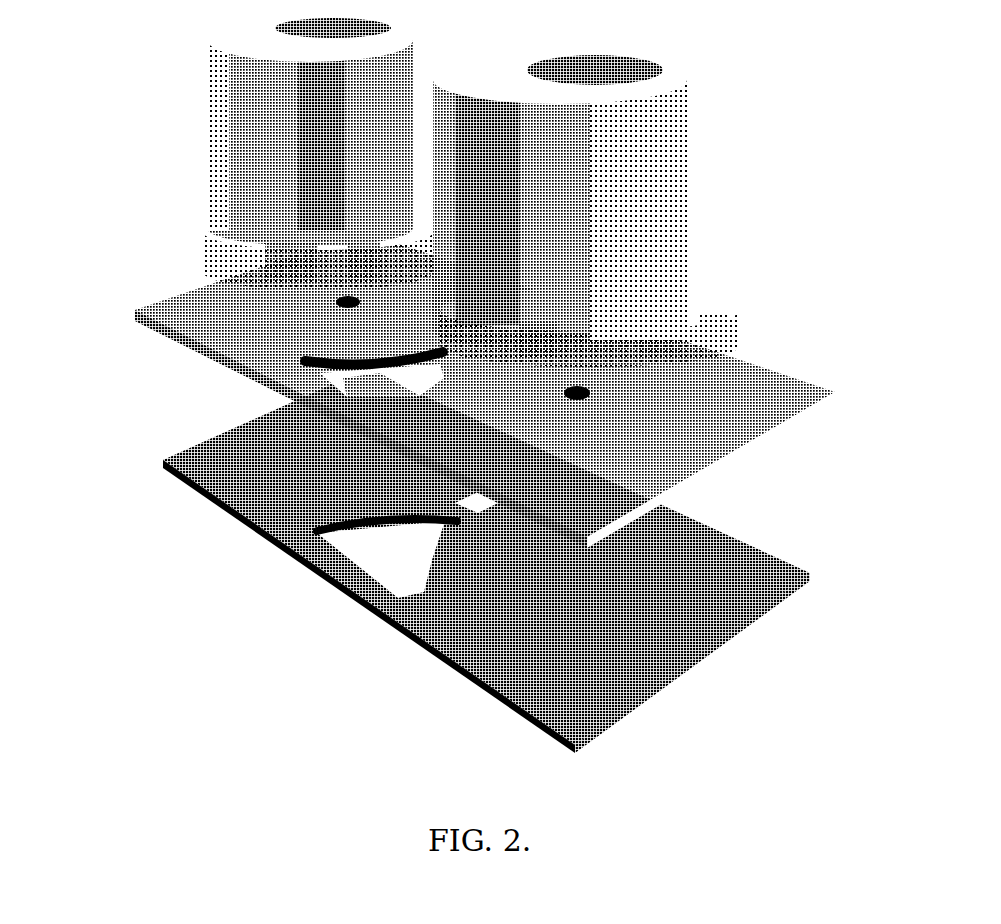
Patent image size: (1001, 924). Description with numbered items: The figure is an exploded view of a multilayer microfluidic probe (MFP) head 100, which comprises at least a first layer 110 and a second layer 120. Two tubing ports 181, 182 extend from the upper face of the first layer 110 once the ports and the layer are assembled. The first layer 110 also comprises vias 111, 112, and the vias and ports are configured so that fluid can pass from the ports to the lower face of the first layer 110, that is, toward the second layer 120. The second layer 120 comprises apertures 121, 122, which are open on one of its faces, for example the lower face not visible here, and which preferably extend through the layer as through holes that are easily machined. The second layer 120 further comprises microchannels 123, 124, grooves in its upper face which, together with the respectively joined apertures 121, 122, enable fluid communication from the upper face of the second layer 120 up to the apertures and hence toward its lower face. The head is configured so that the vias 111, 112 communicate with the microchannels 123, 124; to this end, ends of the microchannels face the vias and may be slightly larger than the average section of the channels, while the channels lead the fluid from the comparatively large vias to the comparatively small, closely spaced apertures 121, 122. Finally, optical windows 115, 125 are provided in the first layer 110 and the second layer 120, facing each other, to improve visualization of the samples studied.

The multilayer MFP head 100 is at (462, 492).
The first layer 110 is at (427, 390).
The via 111 is at (335, 305).
The via 112 is at (585, 398).
The optical window 115 is at (340, 375).
The second layer 120 is at (466, 561).
The aperture 121 is at (348, 537).
The aperture 122 is at (442, 521).
The microchannel 123 is at (222, 505).
The microchannel 124 is at (430, 578).
The optical window 125 is at (437, 517).
The tubing port 181 is at (295, 155).
The tubing port 182 is at (683, 117).